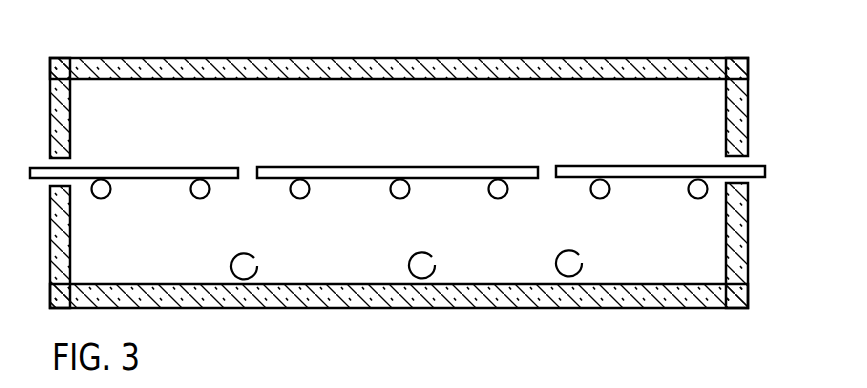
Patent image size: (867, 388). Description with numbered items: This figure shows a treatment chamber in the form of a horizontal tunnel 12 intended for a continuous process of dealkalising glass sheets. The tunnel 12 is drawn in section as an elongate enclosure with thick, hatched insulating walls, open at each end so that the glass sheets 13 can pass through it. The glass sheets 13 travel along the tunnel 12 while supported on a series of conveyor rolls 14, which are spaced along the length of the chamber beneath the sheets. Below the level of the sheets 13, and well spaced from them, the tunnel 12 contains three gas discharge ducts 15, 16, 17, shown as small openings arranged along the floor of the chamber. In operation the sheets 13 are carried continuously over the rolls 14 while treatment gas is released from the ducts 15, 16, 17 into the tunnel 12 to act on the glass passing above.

The horizontal tunnel 12 is at (748, 77).
The glass sheets 13 is at (143, 167).
The conveyor rolls 14 is at (106, 191).
The gas discharge duct 15 is at (258, 266).
The gas discharge duct 16 is at (436, 265).
The gas discharge duct 17 is at (583, 262).